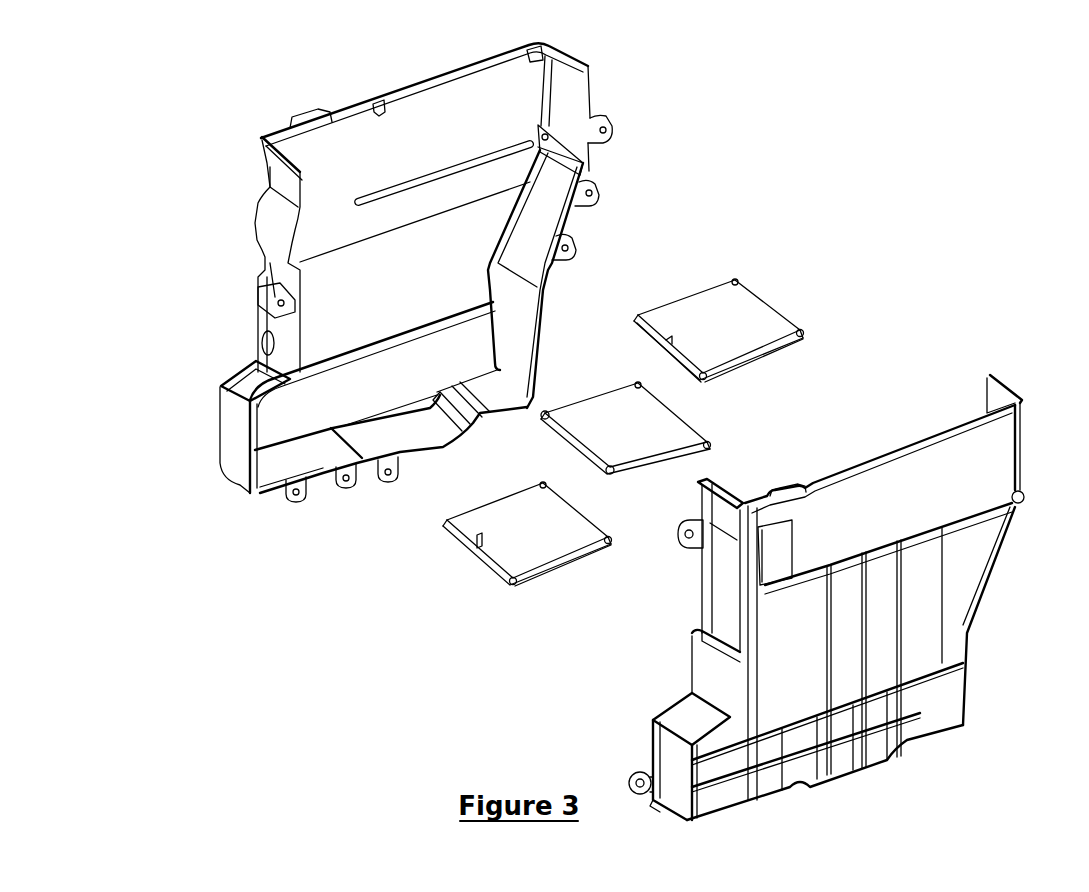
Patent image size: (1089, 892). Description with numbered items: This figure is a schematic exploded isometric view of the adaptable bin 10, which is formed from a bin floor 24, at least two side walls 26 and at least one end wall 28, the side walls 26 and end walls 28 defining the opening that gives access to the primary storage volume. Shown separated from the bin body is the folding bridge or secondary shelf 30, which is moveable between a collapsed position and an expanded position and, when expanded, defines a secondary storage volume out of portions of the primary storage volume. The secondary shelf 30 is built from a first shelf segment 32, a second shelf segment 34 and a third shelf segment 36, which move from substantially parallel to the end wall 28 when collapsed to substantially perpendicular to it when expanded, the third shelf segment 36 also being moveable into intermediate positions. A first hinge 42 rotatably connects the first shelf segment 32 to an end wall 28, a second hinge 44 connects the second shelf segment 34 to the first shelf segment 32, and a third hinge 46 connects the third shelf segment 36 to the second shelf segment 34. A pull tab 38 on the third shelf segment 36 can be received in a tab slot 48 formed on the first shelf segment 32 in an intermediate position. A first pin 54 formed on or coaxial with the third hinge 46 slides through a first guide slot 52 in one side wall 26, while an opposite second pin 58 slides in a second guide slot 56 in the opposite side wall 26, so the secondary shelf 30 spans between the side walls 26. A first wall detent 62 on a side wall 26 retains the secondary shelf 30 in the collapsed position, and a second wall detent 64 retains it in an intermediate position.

The adaptable bin 10 is at (172, 140).
The bin floor 24 is at (868, 770).
The side wall 26 is at (318, 120).
The end wall 28 is at (270, 230).
The secondary shelf 30 is at (802, 266).
The first shelf segment 32 is at (714, 302).
The second shelf segment 34 is at (612, 408).
The third shelf segment 36 is at (514, 518).
The pull tab 38 is at (478, 550).
The first hinge 42 is at (815, 345).
The second hinge 44 is at (712, 386).
The third hinge 46 is at (615, 548).
The tab slot 48 is at (670, 338).
The first guide slot 52 is at (385, 196).
The first pin 54 is at (541, 412).
The second guide slot 56 is at (1010, 518).
The second pin 58 is at (611, 469).
The first wall detent 62 is at (530, 50).
The second wall detent 64 is at (360, 113).